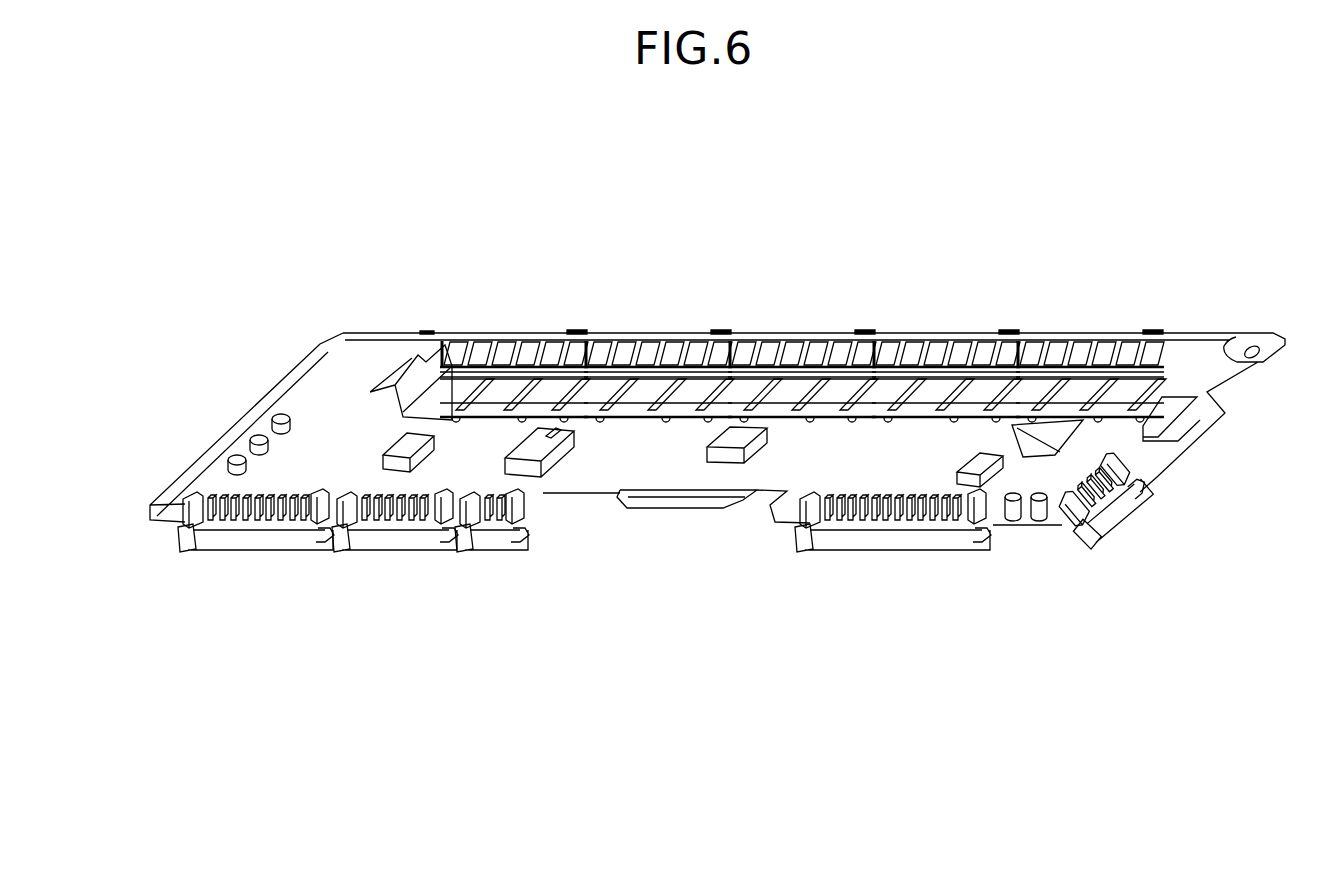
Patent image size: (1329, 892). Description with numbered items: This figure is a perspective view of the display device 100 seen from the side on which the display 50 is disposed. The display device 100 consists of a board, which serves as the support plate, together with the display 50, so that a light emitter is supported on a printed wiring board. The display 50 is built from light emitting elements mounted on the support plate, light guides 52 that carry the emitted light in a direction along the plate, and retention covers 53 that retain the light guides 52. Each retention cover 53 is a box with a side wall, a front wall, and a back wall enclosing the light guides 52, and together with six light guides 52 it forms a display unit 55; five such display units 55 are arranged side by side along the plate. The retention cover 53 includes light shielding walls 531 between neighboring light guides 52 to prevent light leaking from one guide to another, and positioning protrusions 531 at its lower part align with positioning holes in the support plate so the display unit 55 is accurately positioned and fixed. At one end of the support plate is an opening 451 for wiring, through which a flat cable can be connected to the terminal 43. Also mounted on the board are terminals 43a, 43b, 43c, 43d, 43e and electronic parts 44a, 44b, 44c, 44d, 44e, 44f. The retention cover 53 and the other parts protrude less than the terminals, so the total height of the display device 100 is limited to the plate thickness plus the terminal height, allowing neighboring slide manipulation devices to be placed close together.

The display device 100 is at (1222, 318).
The display 50 is at (691, 448).
The display unit 55 is at (575, 330).
The light guide 52 is at (508, 358).
The retention cover 53 is at (546, 423).
The positioning protrusion 531 is at (570, 359).
The opening for wiring 451 is at (1163, 430).
The terminal 43 is at (1052, 447).
The terminal 43a is at (258, 548).
The terminal 43b is at (378, 540).
The terminal 43c is at (487, 548).
The terminal 43d is at (907, 550).
The terminal 43e is at (1120, 520).
The electronic part 44a is at (280, 417).
The electronic part 44b is at (410, 470).
The electronic part 44c is at (540, 476).
The electronic part 44d is at (733, 462).
The electronic part 44e is at (985, 486).
The electronic part 44f is at (1039, 521).